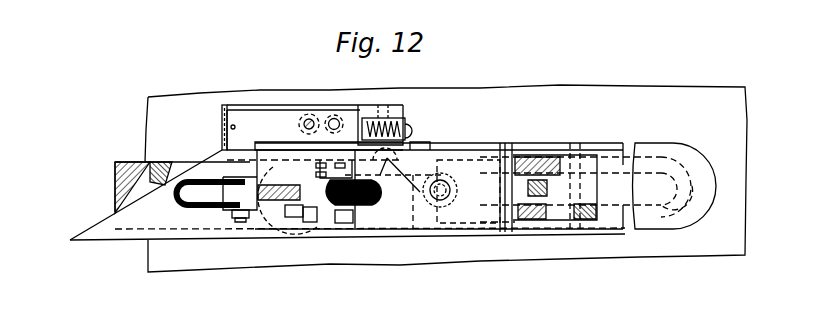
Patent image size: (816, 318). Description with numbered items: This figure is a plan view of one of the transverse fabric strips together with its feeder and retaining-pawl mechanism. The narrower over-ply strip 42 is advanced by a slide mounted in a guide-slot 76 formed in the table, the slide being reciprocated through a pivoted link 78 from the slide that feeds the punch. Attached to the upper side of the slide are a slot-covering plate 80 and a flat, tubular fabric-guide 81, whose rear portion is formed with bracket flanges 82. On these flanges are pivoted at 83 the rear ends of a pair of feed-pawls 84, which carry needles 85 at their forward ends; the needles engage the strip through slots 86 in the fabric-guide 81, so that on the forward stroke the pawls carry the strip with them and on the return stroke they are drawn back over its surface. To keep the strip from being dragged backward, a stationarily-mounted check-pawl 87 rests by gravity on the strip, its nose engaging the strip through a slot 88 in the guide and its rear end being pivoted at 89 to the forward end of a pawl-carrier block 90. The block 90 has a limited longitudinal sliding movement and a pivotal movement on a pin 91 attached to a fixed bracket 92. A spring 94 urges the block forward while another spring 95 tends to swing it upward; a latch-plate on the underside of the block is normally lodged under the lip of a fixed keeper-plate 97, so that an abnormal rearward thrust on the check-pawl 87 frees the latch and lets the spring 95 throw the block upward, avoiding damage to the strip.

The over-ply strip 42 is at (115, 175).
The guide-slot 76 is at (655, 156).
The pivoted link 78 is at (440, 142).
The slot-covering plate 80 is at (688, 218).
The fabric-guide 81 is at (197, 223).
The bracket flange 82 is at (483, 146).
The feed-pawl pivot 83 is at (505, 146).
The feed-pawl 84 is at (477, 177).
The needle 85 is at (356, 157).
The slot 86 is at (290, 208).
The check-pawl 87 is at (200, 186).
The slot 88 is at (187, 207).
The check-pawl pivot 89 is at (237, 220).
The pawl-carrier block 90 is at (267, 118).
The pin 91 is at (385, 100).
The fixed bracket 92 is at (407, 121).
The spring 94 is at (375, 103).
The spring 95 is at (327, 115).
The keeper-plate 97 is at (220, 103).